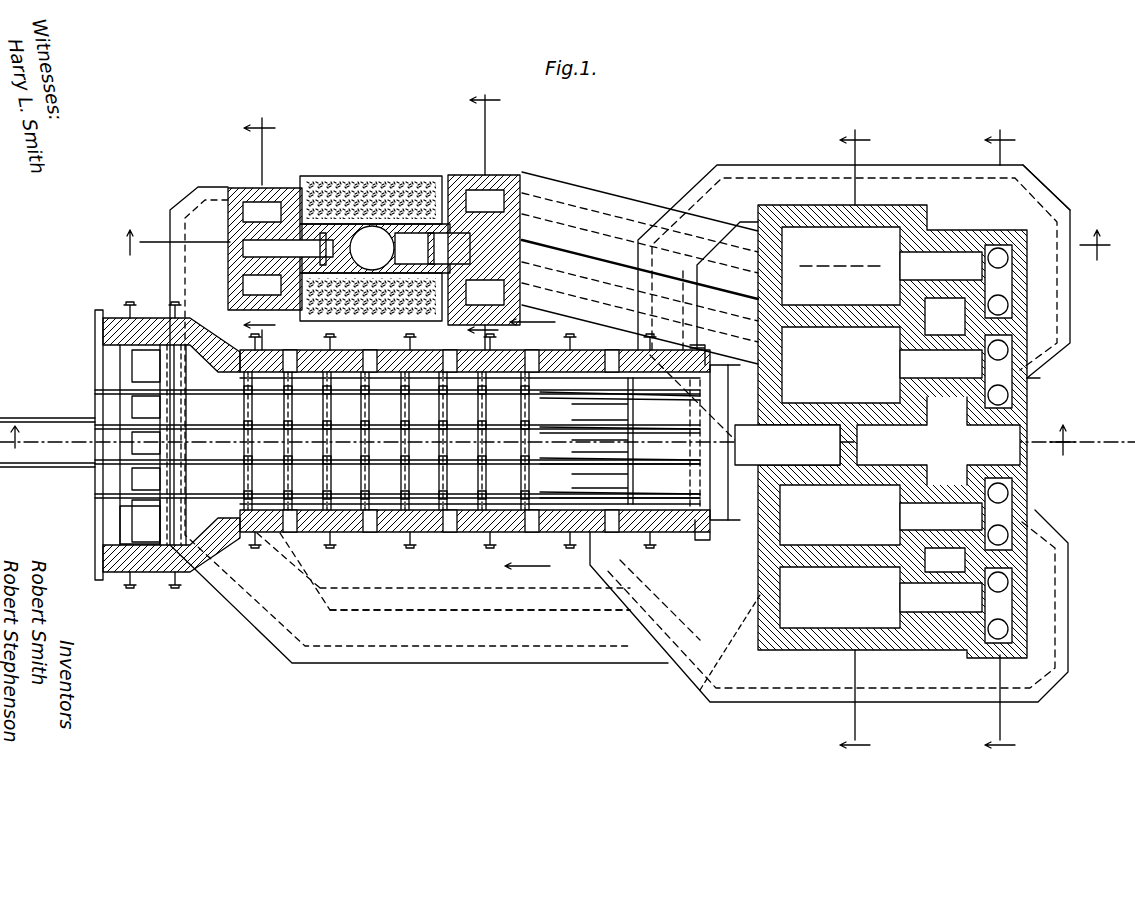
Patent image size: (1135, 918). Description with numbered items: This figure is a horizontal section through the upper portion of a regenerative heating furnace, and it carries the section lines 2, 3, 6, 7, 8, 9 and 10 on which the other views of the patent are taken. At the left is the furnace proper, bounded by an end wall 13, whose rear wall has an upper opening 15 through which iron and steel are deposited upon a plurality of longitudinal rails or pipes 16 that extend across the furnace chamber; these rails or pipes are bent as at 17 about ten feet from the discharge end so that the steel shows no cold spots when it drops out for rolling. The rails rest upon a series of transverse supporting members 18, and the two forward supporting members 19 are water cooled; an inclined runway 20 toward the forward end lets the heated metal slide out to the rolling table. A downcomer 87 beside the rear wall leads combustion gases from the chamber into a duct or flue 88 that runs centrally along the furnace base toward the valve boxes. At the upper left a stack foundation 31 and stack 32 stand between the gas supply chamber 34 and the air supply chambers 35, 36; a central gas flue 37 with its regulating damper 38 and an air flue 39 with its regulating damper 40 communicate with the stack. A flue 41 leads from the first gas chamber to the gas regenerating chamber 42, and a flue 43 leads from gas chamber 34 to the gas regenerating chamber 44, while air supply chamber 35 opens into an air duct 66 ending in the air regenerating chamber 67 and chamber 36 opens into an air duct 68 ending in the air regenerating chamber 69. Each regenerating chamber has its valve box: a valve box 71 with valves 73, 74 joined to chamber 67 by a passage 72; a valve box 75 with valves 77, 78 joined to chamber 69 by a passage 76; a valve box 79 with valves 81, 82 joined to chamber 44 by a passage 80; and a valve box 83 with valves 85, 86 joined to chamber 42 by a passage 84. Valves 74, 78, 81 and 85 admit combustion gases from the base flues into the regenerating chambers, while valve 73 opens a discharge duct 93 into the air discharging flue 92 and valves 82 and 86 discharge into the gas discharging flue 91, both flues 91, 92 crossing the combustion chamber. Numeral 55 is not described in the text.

The section line 2— 2 is at (1067, 440).
The section line 3— 3 is at (530, 445).
The section line 6— 6 is at (611, 251).
The section line 7— 7 is at (1000, 434).
The section line 8— 8 is at (852, 434).
The section line 9— 9 is at (259, 223).
The section line 10— 10 is at (485, 214).
The end wall 13 is at (1033, 385).
The upper opening 15 is at (100, 478).
The longitudinal rails or pipes 16 is at (205, 395).
The bend 17 is at (575, 405).
The transverse supporting members 18 is at (340, 390).
The water cooled supporting members 19 is at (478, 532).
The inclined runway 20 is at (672, 395).
The stack foundation 31 is at (395, 175).
The stack 32 is at (372, 225).
The gas supply chamber 34 is at (262, 285).
The air supply chamber 35 is at (485, 200).
The air supply chamber 36 is at (485, 292).
The central gas flue 37 is at (235, 270).
The regulating damper 38 is at (318, 233).
The air flue 39 is at (520, 250).
The regulating damper 40 is at (460, 250).
The flue 41 is at (185, 212).
The gas regenerating chamber 42 is at (840, 597).
The flue 43 is at (480, 622).
The gas regenerating chamber 44 is at (840, 515).
The upper passage 55 is at (262, 212).
The air duct 66 is at (610, 215).
The air regenerating chamber 67 is at (841, 266).
The air duct 68 is at (665, 245).
The air regenerating chamber 69 is at (841, 365).
The valve box 71 is at (1005, 284).
The passage 72 is at (928, 262).
The controlling valve 73 is at (1000, 245).
The controlling valve 74 is at (1000, 305).
The valve box 75 is at (1020, 378).
The passage 76 is at (941, 364).
The valve 77 is at (1000, 348).
The valve 78 is at (1000, 397).
The valve box 79 is at (1005, 510).
The passage 80 is at (941, 516).
The valve 81 is at (1000, 493).
The valve 82 is at (1000, 535).
The valve box 83 is at (1005, 605).
The passage 84 is at (941, 580).
The controlling valve 85 is at (1005, 582).
The controlling valve 86 is at (1005, 628).
The downcomer 87 is at (150, 522).
The duct or flue 88 is at (877, 441).
The gas discharging flue 91 is at (736, 669).
The air discharging flue 92 is at (790, 210).
The discharge duct 93 is at (1020, 200).